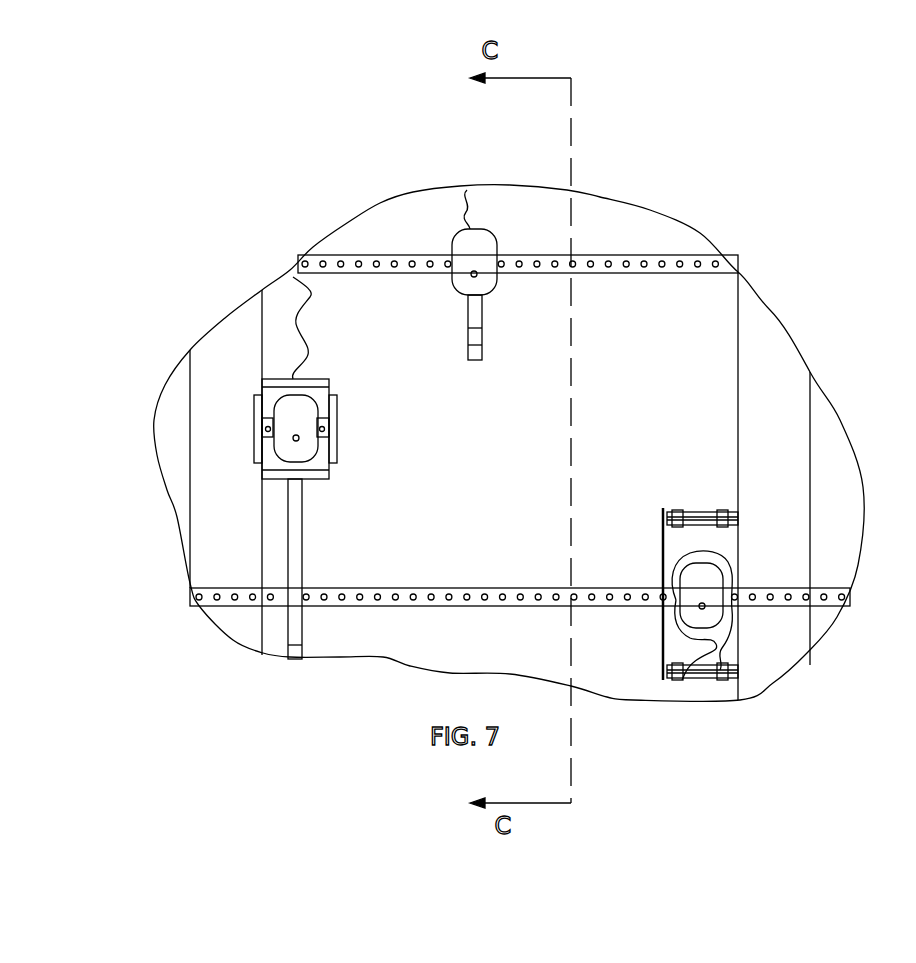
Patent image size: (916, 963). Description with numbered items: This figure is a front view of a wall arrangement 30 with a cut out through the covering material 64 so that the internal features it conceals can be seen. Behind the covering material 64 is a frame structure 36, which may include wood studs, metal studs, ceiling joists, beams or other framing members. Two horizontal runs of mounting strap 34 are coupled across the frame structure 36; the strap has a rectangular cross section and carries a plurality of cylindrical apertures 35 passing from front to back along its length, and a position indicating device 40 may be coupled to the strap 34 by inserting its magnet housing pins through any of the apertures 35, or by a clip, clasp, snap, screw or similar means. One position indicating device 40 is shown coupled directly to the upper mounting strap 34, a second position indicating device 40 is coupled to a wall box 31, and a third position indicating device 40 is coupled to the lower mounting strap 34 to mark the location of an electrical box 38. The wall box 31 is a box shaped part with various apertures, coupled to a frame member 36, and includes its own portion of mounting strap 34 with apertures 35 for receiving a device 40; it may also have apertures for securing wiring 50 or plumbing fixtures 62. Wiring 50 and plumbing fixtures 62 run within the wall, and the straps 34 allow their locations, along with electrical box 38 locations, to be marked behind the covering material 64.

The wall arrangement 30 is at (241, 157).
The wall box 31 is at (332, 410).
The mounting strap 34 is at (653, 255).
The cylindrical apertures 35 is at (359, 263).
The frame structure 36 is at (228, 355).
The electrical box 38 is at (723, 553).
The position indicating device 40 is at (488, 232).
The wiring 50 is at (467, 190).
The plumbing fixtures 62 is at (477, 335).
The covering material 64 is at (136, 665).